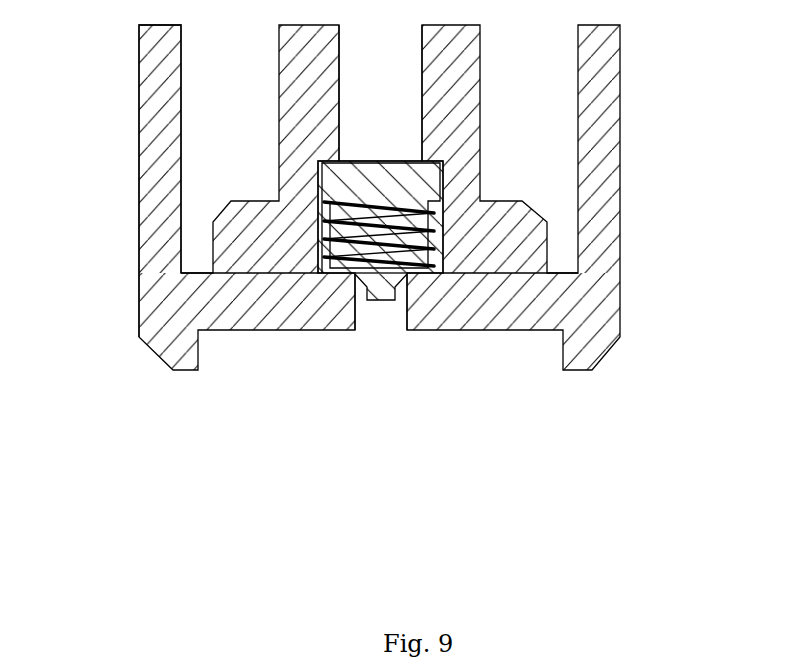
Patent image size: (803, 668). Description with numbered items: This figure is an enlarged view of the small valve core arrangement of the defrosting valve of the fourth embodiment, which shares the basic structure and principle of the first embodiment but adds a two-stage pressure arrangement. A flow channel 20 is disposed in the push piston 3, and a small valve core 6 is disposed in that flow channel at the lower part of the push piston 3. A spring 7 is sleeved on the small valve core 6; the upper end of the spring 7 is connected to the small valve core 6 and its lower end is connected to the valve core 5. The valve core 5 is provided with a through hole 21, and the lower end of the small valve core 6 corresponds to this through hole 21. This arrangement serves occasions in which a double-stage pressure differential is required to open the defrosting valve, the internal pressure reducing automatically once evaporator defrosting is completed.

The push piston 3 is at (279, 147).
The valve core 5 is at (160, 137).
The flow channel 20 is at (387, 139).
The small valve core 6 is at (418, 181).
The spring 7 is at (432, 230).
The through hole 21 is at (377, 323).